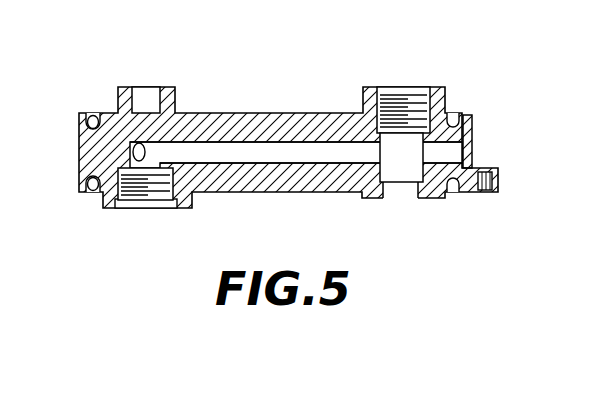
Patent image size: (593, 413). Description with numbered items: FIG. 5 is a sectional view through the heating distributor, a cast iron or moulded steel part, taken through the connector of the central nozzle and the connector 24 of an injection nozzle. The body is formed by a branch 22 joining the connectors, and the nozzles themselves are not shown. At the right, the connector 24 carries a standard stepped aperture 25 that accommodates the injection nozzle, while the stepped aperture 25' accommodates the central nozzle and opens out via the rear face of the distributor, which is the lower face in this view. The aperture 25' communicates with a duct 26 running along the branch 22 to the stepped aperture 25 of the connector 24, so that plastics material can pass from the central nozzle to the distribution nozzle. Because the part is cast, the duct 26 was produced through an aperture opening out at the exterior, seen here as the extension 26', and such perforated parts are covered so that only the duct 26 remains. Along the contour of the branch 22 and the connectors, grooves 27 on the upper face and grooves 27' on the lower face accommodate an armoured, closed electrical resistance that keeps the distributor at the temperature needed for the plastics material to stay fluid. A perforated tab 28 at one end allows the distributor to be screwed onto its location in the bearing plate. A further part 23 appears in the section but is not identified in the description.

The branch 22 is at (188, 114).
The upper threaded gland 23 is at (407, 88).
The connector 24 is at (472, 130).
The stepped aperture 25 is at (435, 188).
The stepped aperture 25' is at (192, 208).
The duct 26 is at (255, 103).
The extension 26' is at (487, 142).
The groove 27 is at (105, 74).
The groove 27' is at (63, 169).
The perforated tab 28 is at (498, 178).